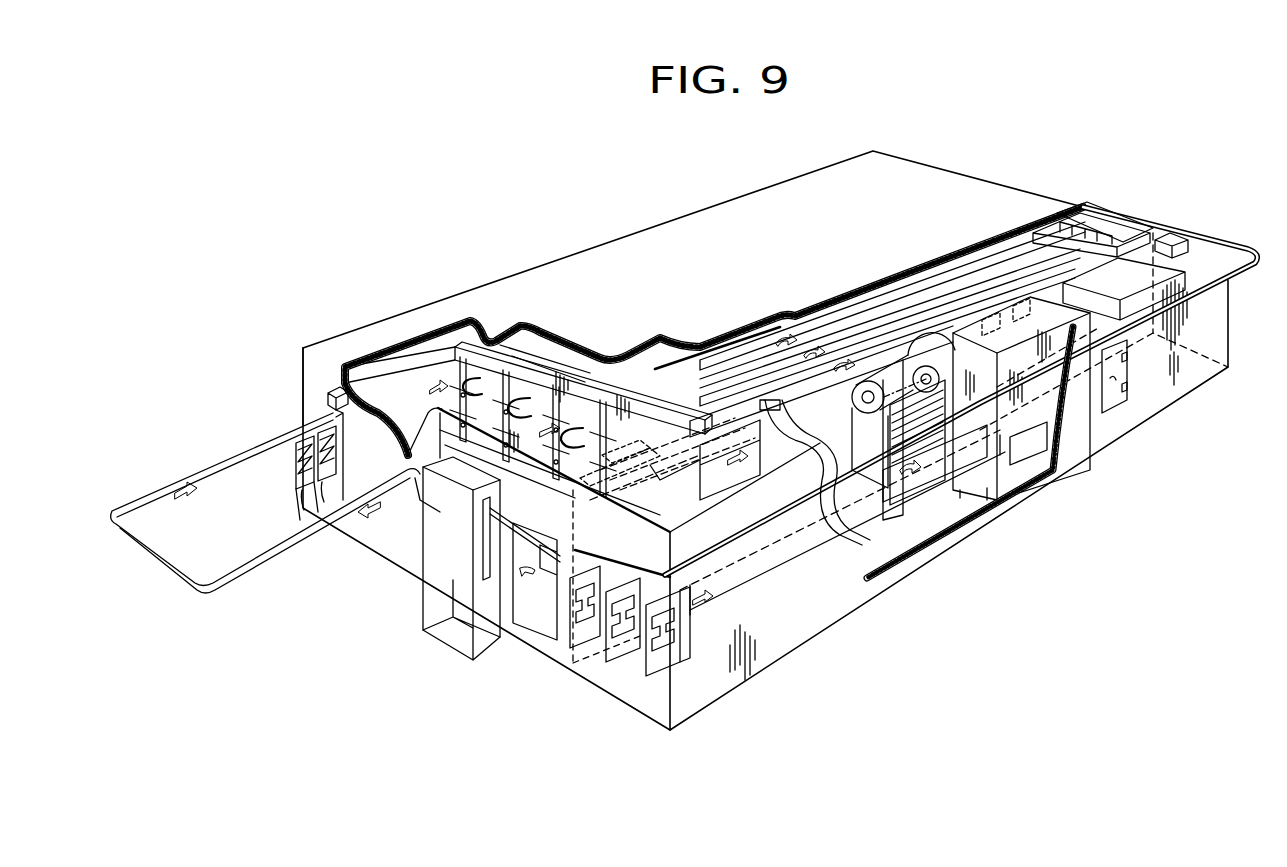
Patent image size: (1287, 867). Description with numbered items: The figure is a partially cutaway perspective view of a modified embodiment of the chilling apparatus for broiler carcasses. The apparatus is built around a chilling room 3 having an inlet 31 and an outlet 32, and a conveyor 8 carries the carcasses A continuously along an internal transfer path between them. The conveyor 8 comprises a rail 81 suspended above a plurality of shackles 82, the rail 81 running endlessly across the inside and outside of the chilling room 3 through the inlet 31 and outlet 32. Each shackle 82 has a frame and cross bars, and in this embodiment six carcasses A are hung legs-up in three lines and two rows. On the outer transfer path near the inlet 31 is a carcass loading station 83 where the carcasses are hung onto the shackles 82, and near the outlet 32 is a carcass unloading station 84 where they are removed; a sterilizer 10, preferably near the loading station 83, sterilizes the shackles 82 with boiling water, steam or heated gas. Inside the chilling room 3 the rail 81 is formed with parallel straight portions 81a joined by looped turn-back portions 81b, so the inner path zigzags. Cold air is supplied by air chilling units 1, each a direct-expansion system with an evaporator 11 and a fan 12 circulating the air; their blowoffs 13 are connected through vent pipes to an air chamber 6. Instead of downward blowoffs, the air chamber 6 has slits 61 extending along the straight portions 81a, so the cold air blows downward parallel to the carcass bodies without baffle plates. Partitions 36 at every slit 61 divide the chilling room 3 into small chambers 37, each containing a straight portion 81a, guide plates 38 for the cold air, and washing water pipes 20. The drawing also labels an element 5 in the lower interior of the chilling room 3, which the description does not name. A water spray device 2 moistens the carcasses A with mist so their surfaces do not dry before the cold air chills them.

The air chilling unit 1 is at (973, 503).
The water spray device 2 is at (1090, 223).
The chilling room 3 is at (363, 370).
The base 5 is at (663, 457).
The air chamber 6 is at (962, 270).
The conveyor 8 is at (397, 383).
The sterilizer 10 is at (430, 560).
The evaporator 11 is at (927, 480).
The fan 12 is at (893, 483).
The blowoff 13 is at (860, 505).
The washing water pipe 20 is at (468, 395).
The inlet 31 is at (338, 500).
The outlet 32 is at (1175, 230).
The partition 36 is at (497, 410).
The small chamber 37 is at (512, 395).
The guide plate 38 is at (457, 393).
The slit 61 is at (903, 303).
The rail 81 is at (740, 540).
The straight portion 81a is at (717, 407).
The turn-back portion 81b is at (517, 387).
The shackle 82 is at (613, 647).
The carcass loading station 83 is at (247, 458).
The carcass unloading station 84 is at (1243, 243).
The broiler carcass A is at (300, 505).